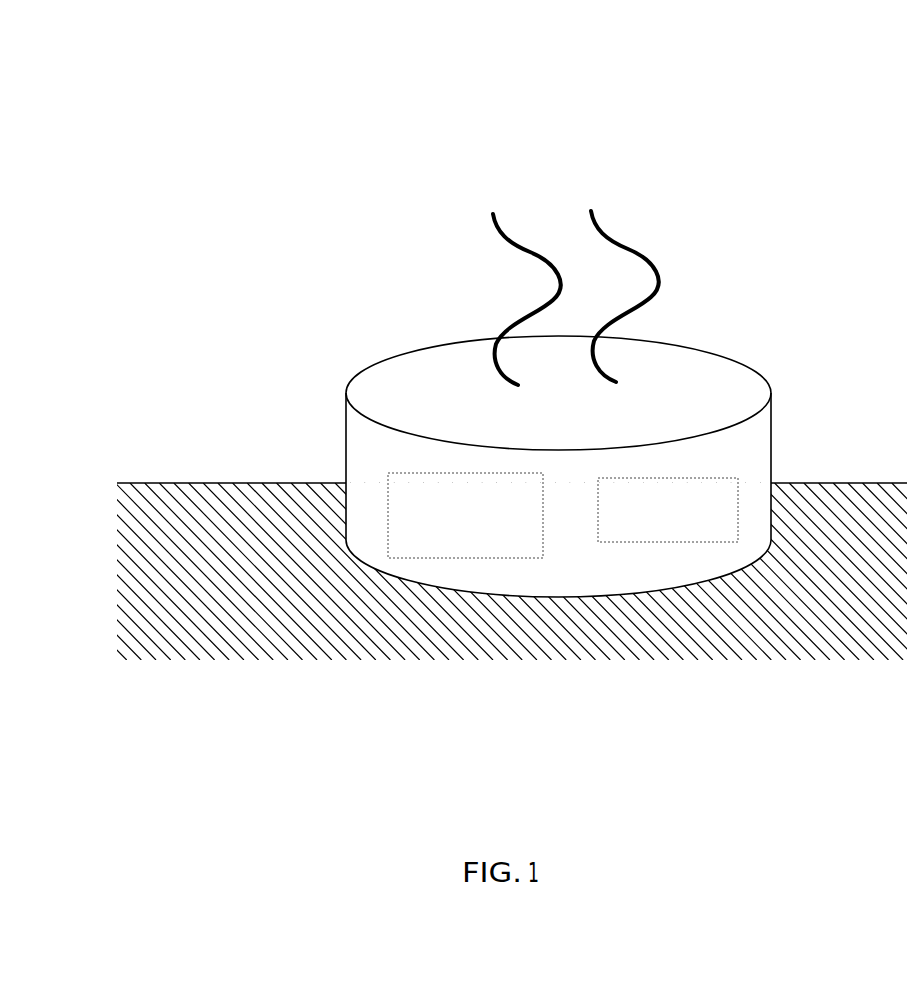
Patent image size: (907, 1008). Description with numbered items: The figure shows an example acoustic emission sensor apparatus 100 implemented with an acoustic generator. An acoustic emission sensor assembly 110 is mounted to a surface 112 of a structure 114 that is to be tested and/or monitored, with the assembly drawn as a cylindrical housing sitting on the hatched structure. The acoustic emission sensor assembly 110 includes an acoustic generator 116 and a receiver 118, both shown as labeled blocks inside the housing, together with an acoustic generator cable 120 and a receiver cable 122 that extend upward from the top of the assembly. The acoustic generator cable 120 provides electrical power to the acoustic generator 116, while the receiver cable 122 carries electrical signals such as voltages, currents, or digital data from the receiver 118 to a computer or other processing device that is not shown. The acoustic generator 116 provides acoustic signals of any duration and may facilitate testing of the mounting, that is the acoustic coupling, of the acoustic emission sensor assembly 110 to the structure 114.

The acoustic emission sensor apparatus 100 is at (306, 156).
The acoustic emission sensor assembly 110 is at (420, 395).
The surface 112 is at (172, 483).
The structure 114 is at (145, 548).
The acoustic generator 116 is at (447, 552).
The receiver 118 is at (652, 534).
The acoustic generator cable 120 is at (502, 238).
The receiver cable 122 is at (640, 248).